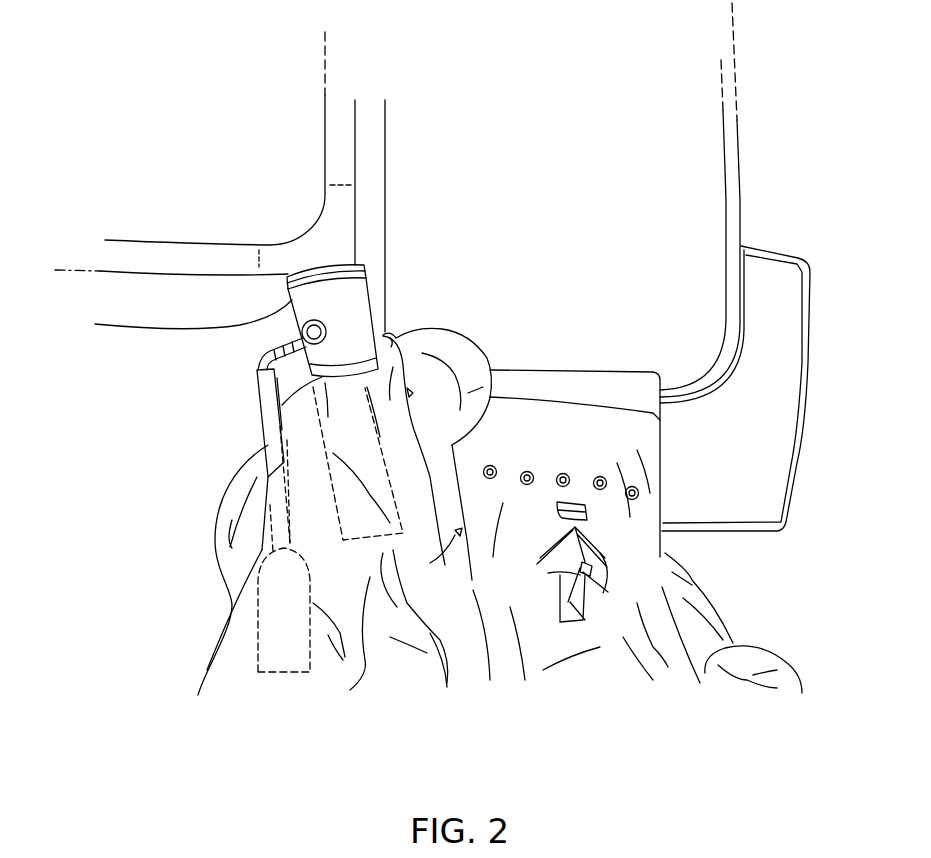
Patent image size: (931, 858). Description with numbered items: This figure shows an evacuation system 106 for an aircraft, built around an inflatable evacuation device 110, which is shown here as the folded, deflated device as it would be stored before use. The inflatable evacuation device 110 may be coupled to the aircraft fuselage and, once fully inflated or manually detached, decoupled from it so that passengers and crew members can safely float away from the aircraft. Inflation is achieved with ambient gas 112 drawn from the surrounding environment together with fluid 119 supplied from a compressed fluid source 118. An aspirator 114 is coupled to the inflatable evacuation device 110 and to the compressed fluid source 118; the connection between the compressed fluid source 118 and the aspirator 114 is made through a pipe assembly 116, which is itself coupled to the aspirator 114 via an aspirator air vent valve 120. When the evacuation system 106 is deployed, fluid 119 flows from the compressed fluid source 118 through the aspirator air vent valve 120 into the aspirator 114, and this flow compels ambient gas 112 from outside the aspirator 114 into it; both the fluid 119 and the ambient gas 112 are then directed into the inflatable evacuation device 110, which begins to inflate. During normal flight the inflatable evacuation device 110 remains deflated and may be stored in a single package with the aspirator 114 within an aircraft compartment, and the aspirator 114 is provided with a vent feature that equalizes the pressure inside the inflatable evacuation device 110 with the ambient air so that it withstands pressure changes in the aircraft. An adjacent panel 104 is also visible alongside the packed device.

The armrest panel 104 is at (740, 122).
The evacuation system 106 is at (107, 468).
The inflatable evacuation device 110 is at (467, 663).
The ambient gas 112 is at (319, 262).
The aspirator 114 is at (375, 281).
The pipe assembly 116 is at (257, 378).
The compressed fluid source 118 is at (270, 673).
The fluid 119 is at (284, 610).
The aspirator air vent valve 120 is at (303, 326).